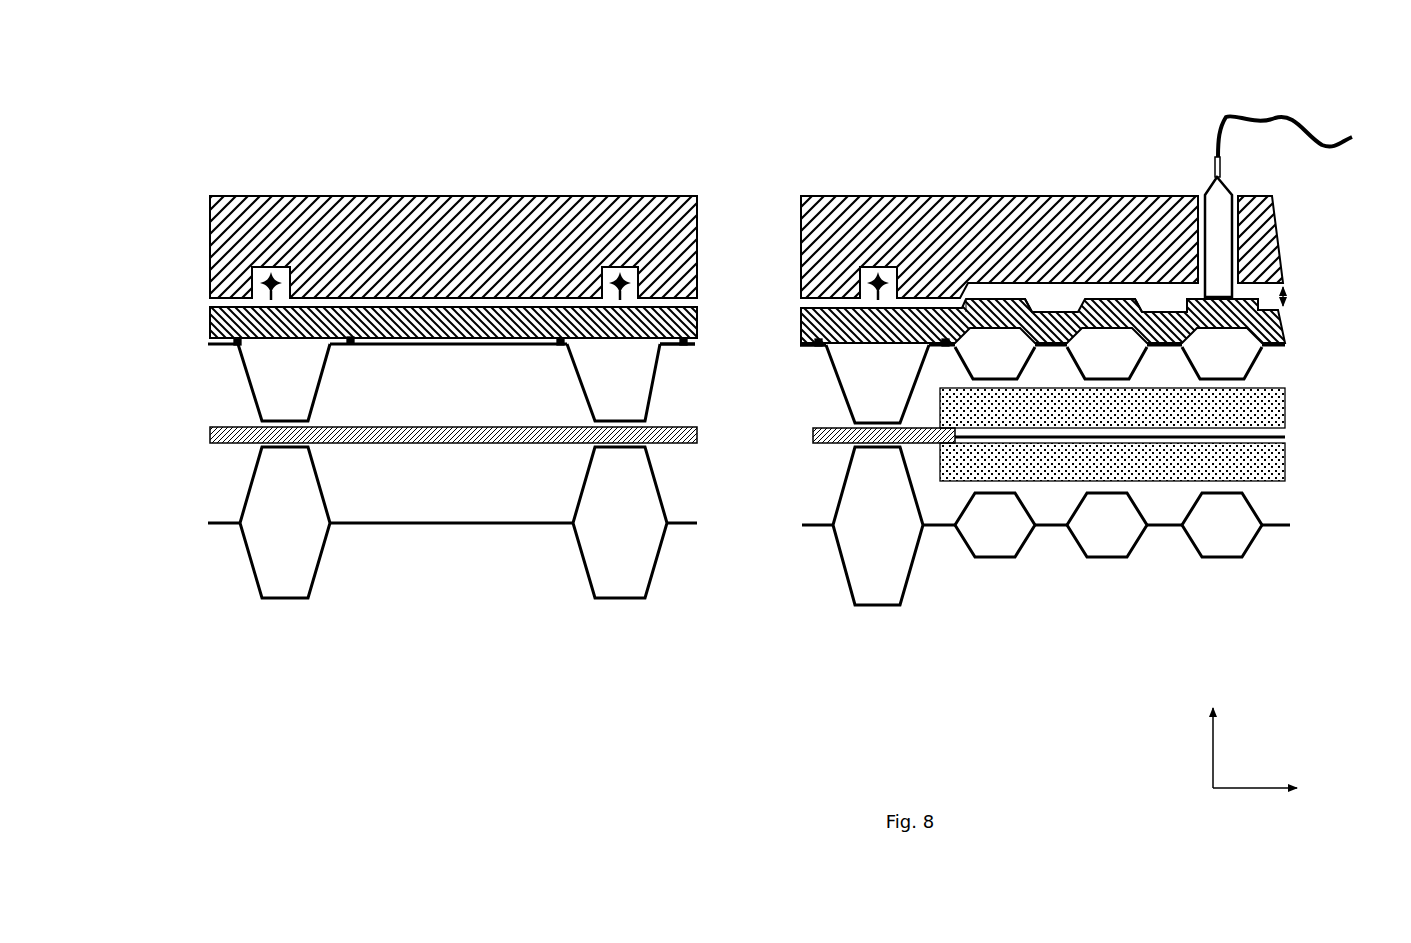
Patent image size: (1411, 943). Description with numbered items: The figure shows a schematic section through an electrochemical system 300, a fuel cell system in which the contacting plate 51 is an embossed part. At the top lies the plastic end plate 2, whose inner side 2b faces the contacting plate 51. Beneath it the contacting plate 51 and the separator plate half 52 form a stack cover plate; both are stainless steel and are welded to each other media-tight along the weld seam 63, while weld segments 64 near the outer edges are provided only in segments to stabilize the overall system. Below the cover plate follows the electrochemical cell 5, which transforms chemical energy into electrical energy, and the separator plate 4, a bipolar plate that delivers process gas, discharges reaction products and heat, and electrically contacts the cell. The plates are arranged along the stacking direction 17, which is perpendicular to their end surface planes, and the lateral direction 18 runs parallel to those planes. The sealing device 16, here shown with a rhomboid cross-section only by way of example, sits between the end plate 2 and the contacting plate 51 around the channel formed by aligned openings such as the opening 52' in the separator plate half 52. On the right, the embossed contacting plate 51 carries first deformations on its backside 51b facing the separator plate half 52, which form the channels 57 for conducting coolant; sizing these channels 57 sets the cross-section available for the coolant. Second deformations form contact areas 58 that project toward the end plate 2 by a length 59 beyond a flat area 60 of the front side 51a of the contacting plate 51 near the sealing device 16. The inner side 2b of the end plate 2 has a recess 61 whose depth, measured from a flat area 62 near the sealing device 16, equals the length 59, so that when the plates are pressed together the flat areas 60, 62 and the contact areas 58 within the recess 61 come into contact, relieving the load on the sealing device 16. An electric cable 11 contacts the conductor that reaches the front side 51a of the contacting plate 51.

The electrochemical system 300 is at (470, 144).
The end plate 2 is at (609, 196).
The inner side of the end plate 2b is at (1057, 292).
The sealing device 16 is at (618, 300).
The contacting plate 51 is at (214, 327).
The flat area of the front side of the contacting plate 60 is at (810, 305).
The contact areas 58 is at (996, 297).
The recess 61 is at (979, 281).
The front side of the contacting plate 51a is at (1268, 298).
The length 59 is at (1288, 296).
The electric cable 11 is at (1273, 121).
The separator plate half 52 is at (748, 383).
The opening in the separator plate half 52' is at (702, 339).
The channels 57 is at (1000, 342).
The weld segments 64 is at (233, 345).
The weld seam 63 is at (560, 344).
The flat area of the inner side of the end plate 62 is at (813, 346).
The backside of the contacting plate 51b is at (630, 338).
The electrochemical cell 5 is at (1308, 432).
The separator plate 4 is at (471, 525).
The stacking direction 17 is at (1213, 758).
The lateral direction 18 is at (1263, 790).